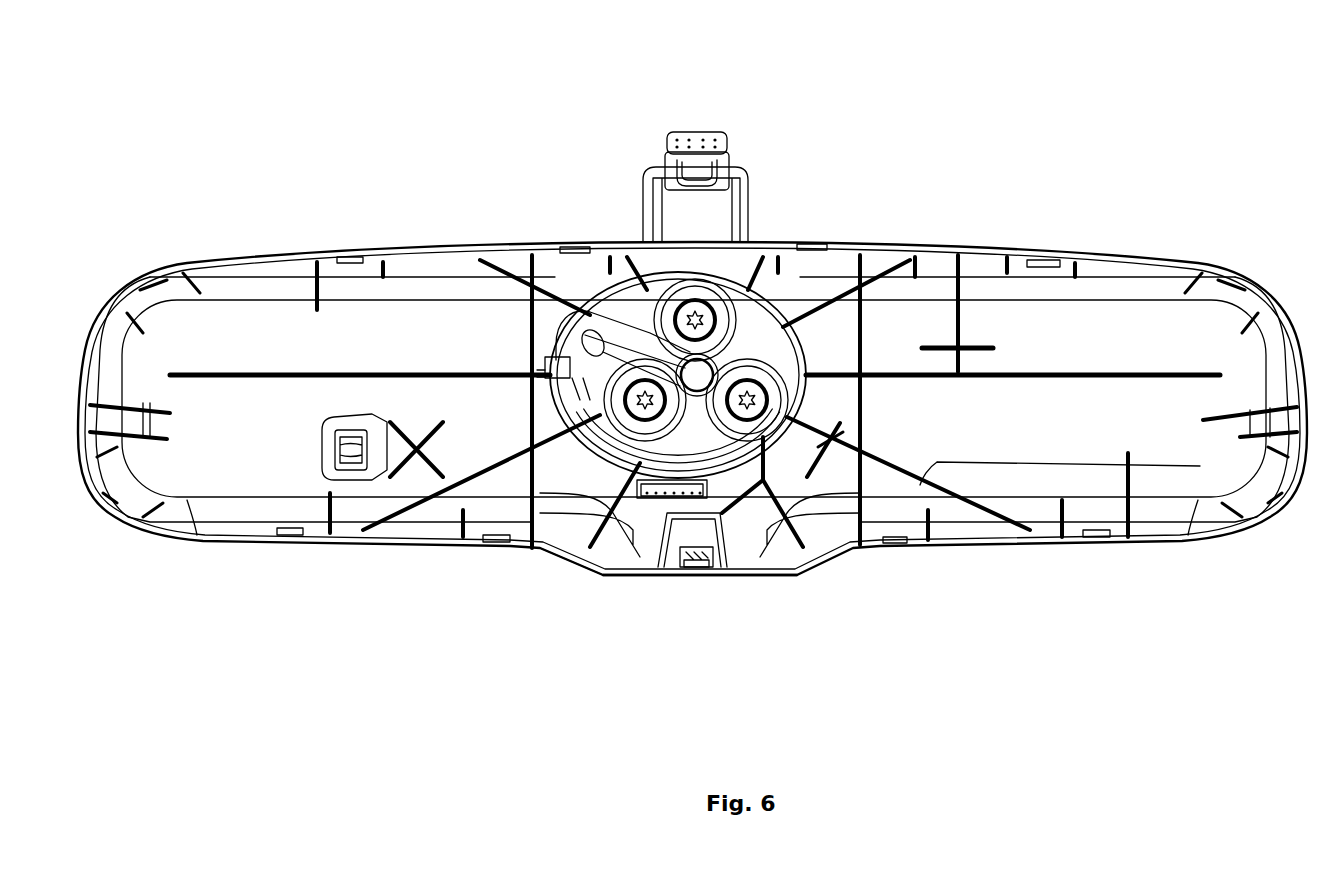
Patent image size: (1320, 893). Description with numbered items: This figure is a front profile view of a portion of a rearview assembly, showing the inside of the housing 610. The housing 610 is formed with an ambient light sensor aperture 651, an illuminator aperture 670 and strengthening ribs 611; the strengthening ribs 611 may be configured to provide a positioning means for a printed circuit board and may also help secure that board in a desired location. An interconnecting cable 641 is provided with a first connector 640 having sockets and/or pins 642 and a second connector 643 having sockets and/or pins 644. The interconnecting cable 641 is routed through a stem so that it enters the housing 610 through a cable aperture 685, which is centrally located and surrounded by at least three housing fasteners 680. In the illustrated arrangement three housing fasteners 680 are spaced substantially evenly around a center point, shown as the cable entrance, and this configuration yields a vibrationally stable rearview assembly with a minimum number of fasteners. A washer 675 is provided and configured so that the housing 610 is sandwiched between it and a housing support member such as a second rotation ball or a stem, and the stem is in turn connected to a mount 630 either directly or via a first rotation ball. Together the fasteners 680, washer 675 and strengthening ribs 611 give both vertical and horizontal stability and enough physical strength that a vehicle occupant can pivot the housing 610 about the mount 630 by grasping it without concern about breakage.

The housing 610 is at (325, 335).
The strengthening ribs 611 is at (503, 417).
The mount 630 is at (738, 212).
The first connector 640 is at (735, 158).
The sockets and/or pins 642 is at (727, 130).
The second connector 643 is at (606, 480).
The sockets and/or pins 644 is at (677, 520).
The ambient light sensor aperture 651 is at (350, 455).
The illuminator aperture 670 is at (702, 578).
The washer 675 is at (757, 327).
The housing fasteners 680 is at (645, 400).
The cable aperture 685 is at (700, 395).
The interconnecting cable 641 is at (547, 552).